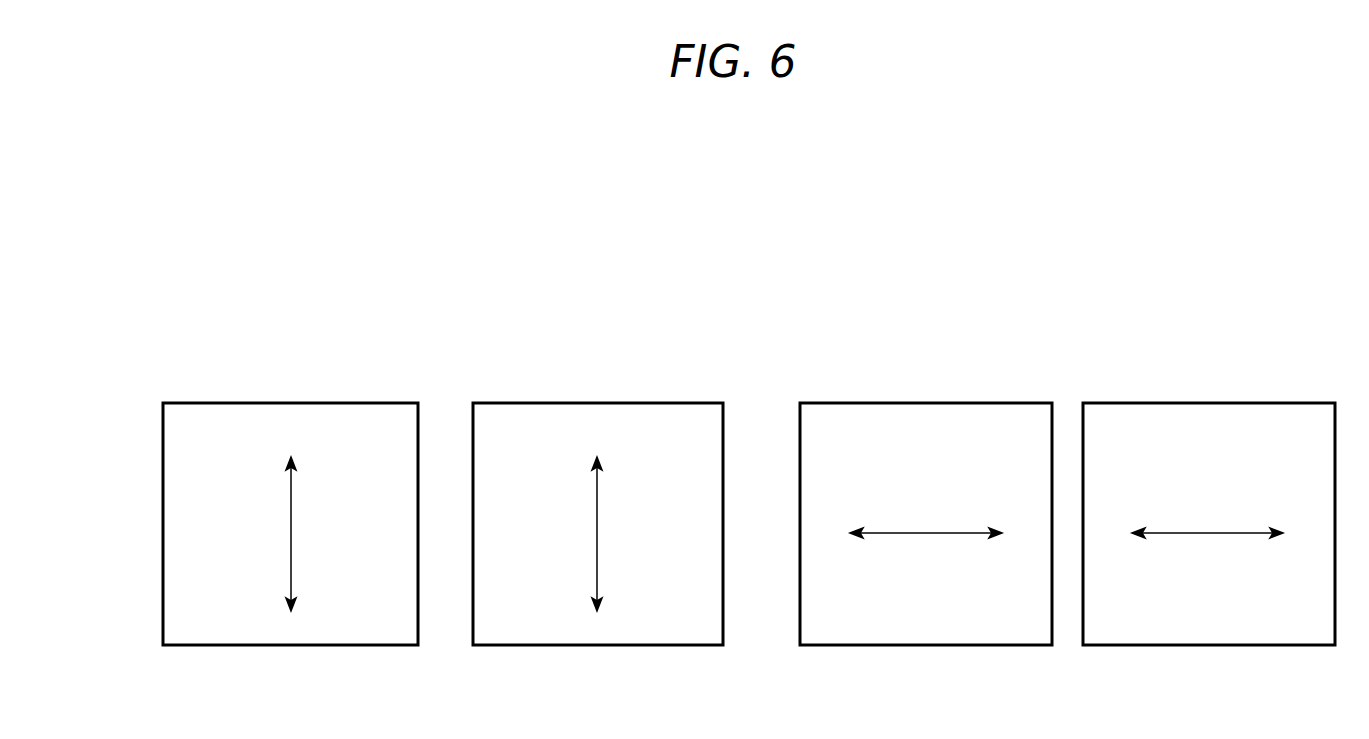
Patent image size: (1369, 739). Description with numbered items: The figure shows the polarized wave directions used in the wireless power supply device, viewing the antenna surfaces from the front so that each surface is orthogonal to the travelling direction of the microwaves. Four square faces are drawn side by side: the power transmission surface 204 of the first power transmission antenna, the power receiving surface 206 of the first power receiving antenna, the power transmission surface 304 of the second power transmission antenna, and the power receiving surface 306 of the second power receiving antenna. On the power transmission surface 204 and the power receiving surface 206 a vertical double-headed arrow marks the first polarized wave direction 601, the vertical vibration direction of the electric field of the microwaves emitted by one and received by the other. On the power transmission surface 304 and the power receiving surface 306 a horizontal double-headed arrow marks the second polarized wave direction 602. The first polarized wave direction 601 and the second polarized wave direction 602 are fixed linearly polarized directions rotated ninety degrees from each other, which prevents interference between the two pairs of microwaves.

The power transmission surface 204 is at (345, 423).
The power receiving surface 206 is at (652, 423).
The power transmission surface 304 is at (980, 423).
The power receiving surface 306 is at (1263, 423).
The first polarized wave direction 601 is at (415, 534).
The second polarized wave direction 602 is at (1066, 551).